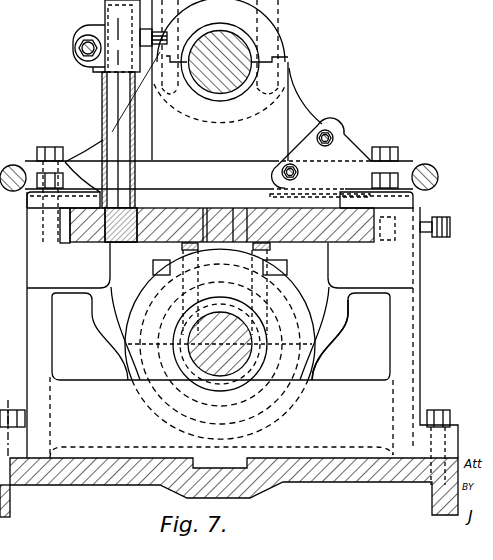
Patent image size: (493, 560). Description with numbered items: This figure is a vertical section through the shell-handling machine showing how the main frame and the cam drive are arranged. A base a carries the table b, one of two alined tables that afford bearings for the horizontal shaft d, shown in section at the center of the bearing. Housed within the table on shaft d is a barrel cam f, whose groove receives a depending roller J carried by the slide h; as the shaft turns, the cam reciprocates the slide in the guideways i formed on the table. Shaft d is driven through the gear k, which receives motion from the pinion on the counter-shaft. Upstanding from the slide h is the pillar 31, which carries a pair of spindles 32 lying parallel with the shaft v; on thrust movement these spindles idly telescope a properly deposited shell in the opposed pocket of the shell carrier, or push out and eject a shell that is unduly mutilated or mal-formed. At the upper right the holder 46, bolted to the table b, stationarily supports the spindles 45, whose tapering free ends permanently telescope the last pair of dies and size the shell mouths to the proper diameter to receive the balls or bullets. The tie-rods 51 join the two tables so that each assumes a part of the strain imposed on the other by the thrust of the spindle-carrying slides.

The base a is at (373, 490).
The table b is at (415, 350).
The horizontal shaft d is at (220, 344).
The barrel cam f is at (310, 373).
The slide h is at (311, 243).
The guideways i is at (68, 218).
The depending roller J is at (180, 247).
The gear k is at (296, 122).
The shaft v is at (213, 97).
The pillar 31 is at (102, 108).
The spindles 32 is at (100, 0).
The spindles 45 is at (299, 171).
The holder 46 is at (340, 129).
The tie-rods 51 is at (438, 178).